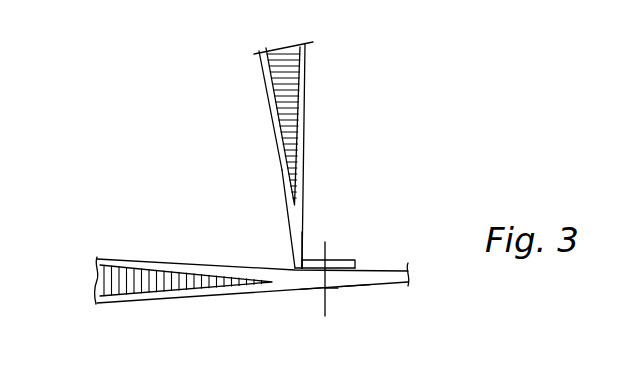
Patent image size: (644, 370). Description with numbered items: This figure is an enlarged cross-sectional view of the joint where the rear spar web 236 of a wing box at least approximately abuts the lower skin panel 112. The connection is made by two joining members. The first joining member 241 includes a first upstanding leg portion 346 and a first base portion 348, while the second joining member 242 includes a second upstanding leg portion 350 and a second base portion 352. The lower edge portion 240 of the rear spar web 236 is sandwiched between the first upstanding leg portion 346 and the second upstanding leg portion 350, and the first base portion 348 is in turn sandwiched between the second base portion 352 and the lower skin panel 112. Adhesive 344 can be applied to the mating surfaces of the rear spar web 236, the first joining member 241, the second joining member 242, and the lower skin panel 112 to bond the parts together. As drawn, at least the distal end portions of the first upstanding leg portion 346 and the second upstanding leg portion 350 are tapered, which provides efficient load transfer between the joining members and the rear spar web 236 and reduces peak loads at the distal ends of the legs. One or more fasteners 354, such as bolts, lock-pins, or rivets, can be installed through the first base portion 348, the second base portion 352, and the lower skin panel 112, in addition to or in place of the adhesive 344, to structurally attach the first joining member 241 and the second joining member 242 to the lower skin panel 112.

The lower skin panel 112 is at (113, 262).
The rear spar web 236 is at (305, 94).
The lower edge portion 240 is at (280, 160).
The first upstanding leg portion 346 is at (288, 215).
The first joining member 241 is at (293, 255).
The adhesive 344 is at (303, 233).
The second upstanding leg portion 350 is at (303, 248).
The second joining member 242 is at (337, 260).
The second base portion 352 is at (348, 261).
The first base portion 348 is at (350, 287).
The fasteners 354 is at (323, 292).